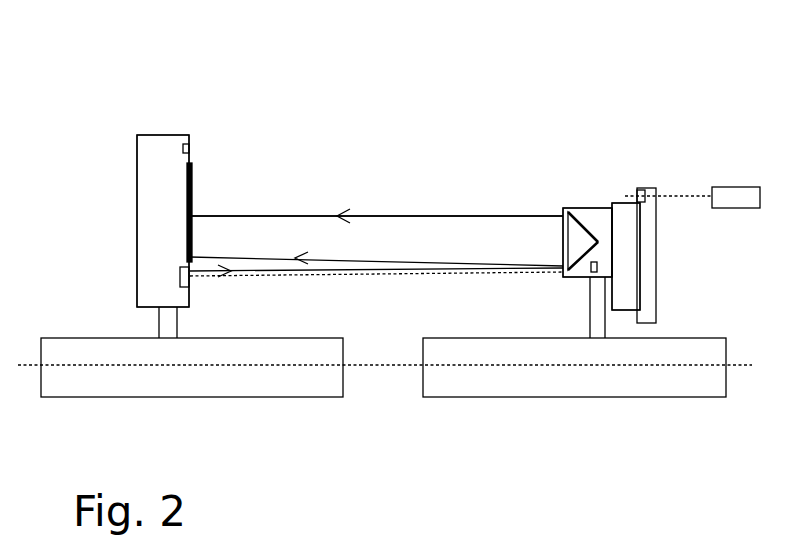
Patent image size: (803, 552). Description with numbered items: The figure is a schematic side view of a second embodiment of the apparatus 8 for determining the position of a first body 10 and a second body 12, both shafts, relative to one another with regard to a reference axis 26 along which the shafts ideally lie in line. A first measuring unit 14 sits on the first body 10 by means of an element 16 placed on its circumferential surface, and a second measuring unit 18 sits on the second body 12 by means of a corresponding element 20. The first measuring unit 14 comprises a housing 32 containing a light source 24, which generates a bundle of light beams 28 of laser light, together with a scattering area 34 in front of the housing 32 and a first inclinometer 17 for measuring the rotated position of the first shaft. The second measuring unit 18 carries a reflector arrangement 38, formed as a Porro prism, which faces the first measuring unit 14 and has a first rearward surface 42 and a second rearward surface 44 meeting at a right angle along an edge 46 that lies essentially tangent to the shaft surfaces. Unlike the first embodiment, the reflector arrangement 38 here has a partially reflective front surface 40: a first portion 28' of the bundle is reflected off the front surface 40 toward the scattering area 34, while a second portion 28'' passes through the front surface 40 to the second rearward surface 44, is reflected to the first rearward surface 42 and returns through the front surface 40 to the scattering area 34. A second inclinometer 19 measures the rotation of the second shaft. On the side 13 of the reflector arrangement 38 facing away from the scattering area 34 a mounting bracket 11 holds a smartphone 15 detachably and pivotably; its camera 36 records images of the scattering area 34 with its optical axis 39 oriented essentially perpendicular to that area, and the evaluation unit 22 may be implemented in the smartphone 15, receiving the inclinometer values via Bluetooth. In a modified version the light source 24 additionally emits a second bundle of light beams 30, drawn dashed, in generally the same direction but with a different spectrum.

The apparatus 8 is at (108, 86).
The first body 10 is at (142, 381).
The mounting bracket 11 is at (622, 212).
The second body 12 is at (555, 377).
The side of the reflector arrangement 13 is at (612, 260).
The first measuring unit 14 is at (106, 196).
The smartphone 15 is at (648, 305).
The element 16 is at (175, 318).
The first inclinometer 17 is at (190, 147).
The second measuring unit 18 is at (680, 175).
The second inclinometer 19 is at (585, 275).
The element 20 is at (595, 325).
The evaluation unit 22 is at (738, 205).
The light source 24 is at (185, 270).
The reference axis 26 is at (380, 367).
The bundle of light beams 28 is at (376, 286).
The first portion of the bundle of light beams 28' is at (376, 247).
The second portion of the bundle of light beams 28'' is at (376, 189).
The second bundle of light beams 30 is at (455, 275).
The housing 32 is at (147, 240).
The scattering area 34 is at (192, 207).
The camera 36 is at (643, 192).
The reflector arrangement 38 is at (581, 195).
The optical axis 39 is at (288, 197).
The front surface 40 is at (563, 242).
The first rearward surface 42 is at (567, 209).
The second rearward surface 44 is at (557, 272).
The edge 46 is at (607, 262).